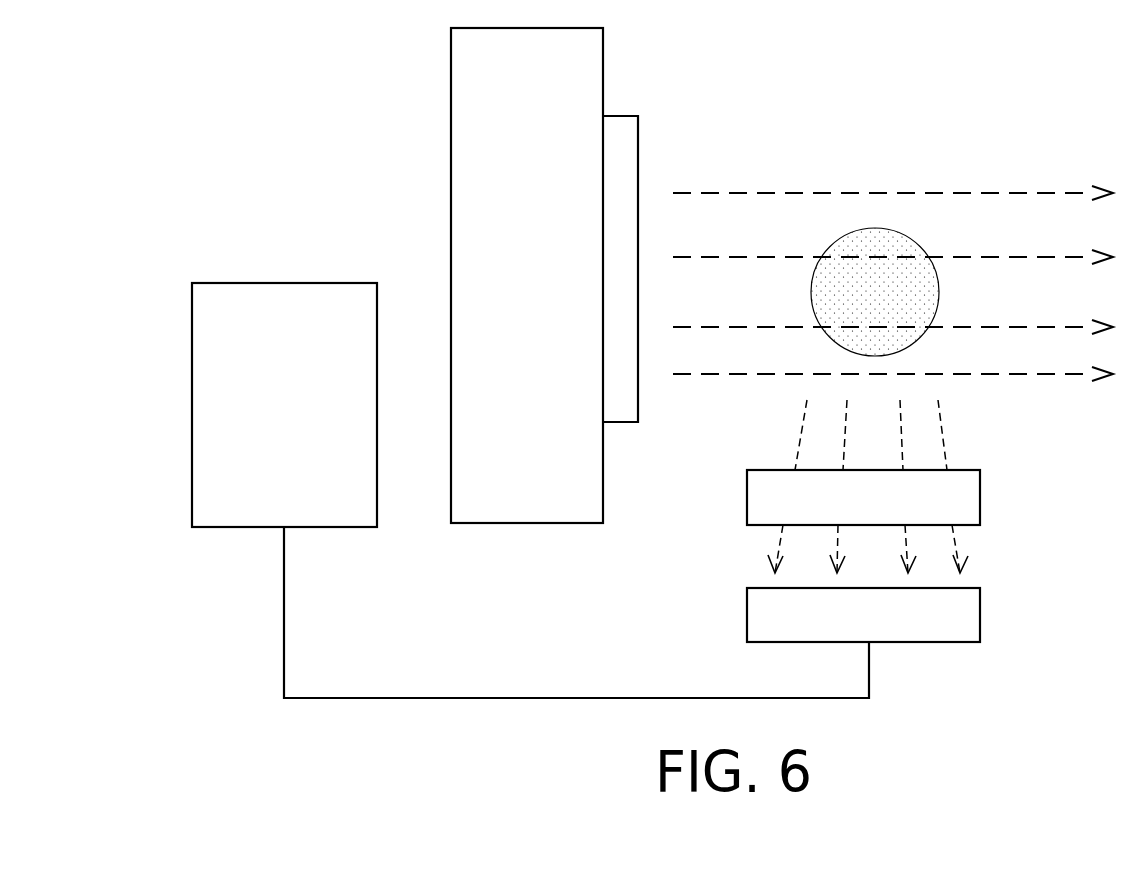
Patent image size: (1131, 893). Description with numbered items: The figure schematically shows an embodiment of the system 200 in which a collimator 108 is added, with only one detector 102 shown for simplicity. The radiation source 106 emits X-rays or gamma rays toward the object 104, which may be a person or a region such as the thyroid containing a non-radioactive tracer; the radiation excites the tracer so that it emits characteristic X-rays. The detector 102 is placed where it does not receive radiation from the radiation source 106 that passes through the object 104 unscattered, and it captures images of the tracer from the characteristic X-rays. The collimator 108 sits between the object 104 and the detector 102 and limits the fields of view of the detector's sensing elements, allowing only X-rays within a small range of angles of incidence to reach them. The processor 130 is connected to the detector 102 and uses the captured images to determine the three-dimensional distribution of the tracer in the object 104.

The system 200 is at (323, 191).
The radiation source 106 is at (575, 283).
The processor 130 is at (313, 428).
The object 104 is at (911, 316).
The collimator 108 is at (891, 510).
The X-ray detector 102 is at (891, 627).